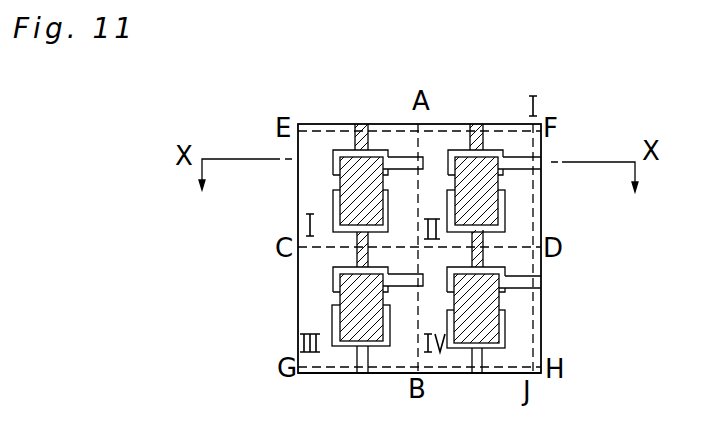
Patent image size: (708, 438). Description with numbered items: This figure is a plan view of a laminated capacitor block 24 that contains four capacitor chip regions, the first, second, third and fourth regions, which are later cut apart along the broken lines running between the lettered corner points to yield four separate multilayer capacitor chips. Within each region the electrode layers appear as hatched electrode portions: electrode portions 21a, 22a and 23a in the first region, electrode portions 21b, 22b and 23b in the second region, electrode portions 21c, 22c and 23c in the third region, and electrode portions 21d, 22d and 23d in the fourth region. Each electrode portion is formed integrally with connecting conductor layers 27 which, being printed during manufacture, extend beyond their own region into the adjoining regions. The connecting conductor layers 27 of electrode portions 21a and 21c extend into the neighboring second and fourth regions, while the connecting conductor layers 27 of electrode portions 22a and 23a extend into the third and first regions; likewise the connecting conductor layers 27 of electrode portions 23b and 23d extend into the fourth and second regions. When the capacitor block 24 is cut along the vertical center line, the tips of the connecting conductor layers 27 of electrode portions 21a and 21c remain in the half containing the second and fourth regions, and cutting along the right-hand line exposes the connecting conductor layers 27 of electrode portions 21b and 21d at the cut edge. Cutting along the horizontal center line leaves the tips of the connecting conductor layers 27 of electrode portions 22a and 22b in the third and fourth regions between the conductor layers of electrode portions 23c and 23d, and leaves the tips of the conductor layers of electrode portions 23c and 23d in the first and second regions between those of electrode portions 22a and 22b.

The electrode portion 21a is at (344, 150).
The electrode portion 21b is at (493, 150).
The electrode portion 21c is at (332, 278).
The electrode portion 21d is at (503, 286).
The electrode portion 22a is at (333, 203).
The electrode portion 22b is at (503, 202).
The electrode portion 22c is at (332, 318).
The electrode portion 22d is at (505, 327).
The electrode portion 23a is at (338, 182).
The electrode portion 23b is at (507, 185).
The electrode portion 23c is at (332, 305).
The electrode portion 23d is at (499, 302).
The connecting conductor layer 27 is at (408, 158).
The capacitor block 24 is at (340, 373).